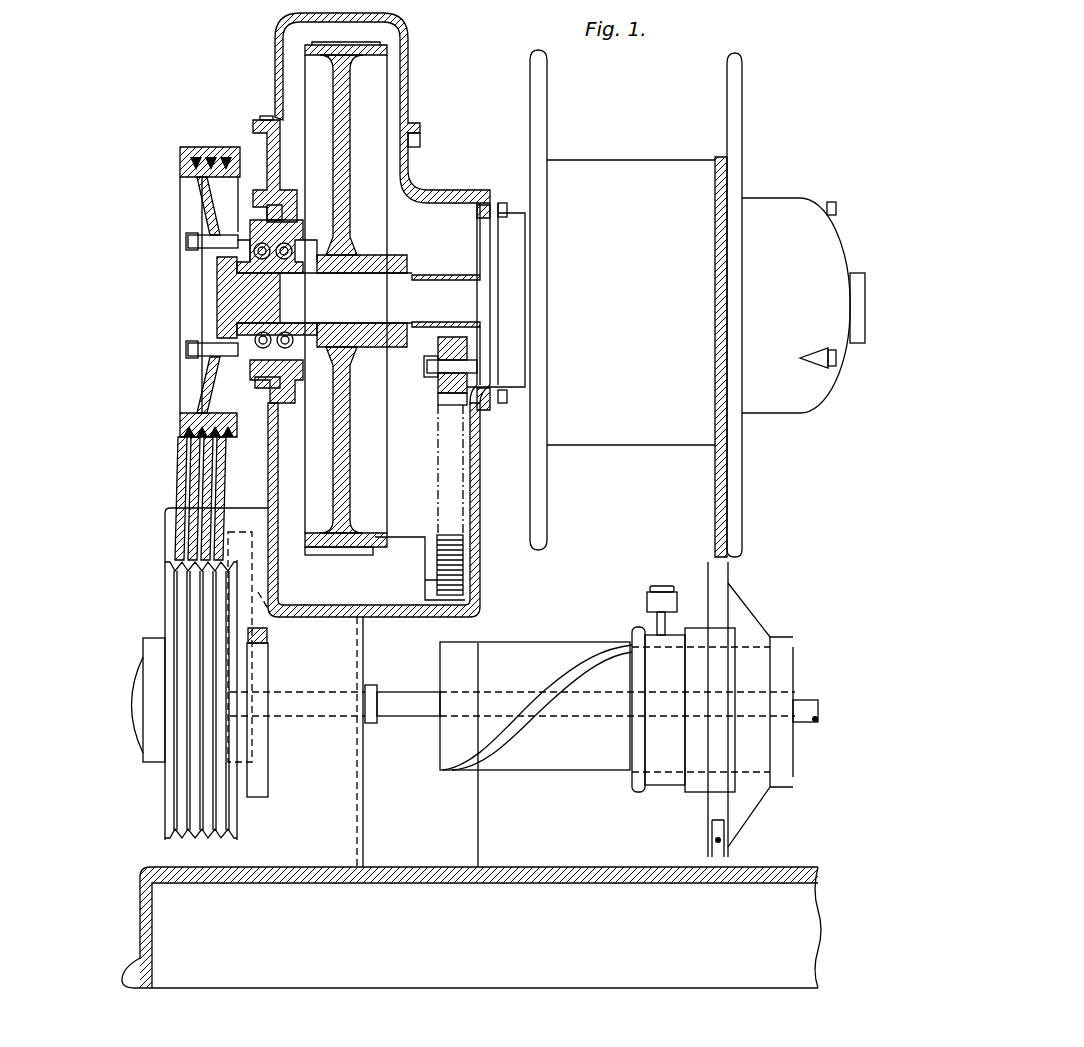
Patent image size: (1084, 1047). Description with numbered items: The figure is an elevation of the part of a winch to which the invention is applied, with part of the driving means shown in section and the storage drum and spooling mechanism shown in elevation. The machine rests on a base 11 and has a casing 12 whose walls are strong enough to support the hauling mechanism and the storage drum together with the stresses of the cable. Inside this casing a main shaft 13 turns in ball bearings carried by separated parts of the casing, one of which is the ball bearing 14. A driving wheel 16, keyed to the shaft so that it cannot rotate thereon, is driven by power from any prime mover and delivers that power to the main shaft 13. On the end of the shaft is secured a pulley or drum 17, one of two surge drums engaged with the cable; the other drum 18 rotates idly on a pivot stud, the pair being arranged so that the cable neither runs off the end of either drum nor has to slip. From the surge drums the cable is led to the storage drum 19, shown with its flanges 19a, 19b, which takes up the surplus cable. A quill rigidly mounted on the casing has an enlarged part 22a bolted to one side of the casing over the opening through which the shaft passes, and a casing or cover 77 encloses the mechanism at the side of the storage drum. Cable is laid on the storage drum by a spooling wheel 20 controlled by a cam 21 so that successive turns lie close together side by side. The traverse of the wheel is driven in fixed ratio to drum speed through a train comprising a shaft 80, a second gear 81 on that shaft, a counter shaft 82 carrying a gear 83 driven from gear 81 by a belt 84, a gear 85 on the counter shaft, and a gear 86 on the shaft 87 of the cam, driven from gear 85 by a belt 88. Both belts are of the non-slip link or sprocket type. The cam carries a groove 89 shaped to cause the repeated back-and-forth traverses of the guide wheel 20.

The base 11 is at (555, 877).
The casing 12 is at (452, 191).
The main shaft 13 is at (423, 293).
The ball bearing 14 is at (298, 237).
The driving wheel 16 is at (350, 98).
The pulley or drum 17 is at (193, 185).
The drum 18 is at (172, 601).
The storage drum 19 is at (617, 173).
The storage drum flange 19a is at (543, 95).
The storage drum flange 19b is at (733, 88).
The spooling drum or wheel 20 is at (707, 833).
The cam 21 is at (560, 762).
The enlarged part of quill 22a is at (515, 218).
The gear casing 77 is at (803, 305).
The shaft 80 is at (463, 367).
The second gear 81 is at (438, 345).
The counter shaft 82 is at (433, 557).
The gear 83 is at (457, 568).
The belt 84 is at (442, 447).
The gear 85 is at (243, 530).
The gear 86 is at (250, 773).
The shaft of cam 87 is at (405, 715).
The belt 88 is at (277, 605).
The groove 89 is at (557, 697).